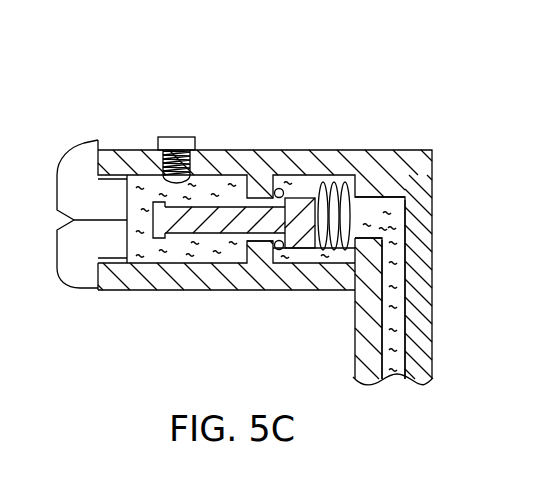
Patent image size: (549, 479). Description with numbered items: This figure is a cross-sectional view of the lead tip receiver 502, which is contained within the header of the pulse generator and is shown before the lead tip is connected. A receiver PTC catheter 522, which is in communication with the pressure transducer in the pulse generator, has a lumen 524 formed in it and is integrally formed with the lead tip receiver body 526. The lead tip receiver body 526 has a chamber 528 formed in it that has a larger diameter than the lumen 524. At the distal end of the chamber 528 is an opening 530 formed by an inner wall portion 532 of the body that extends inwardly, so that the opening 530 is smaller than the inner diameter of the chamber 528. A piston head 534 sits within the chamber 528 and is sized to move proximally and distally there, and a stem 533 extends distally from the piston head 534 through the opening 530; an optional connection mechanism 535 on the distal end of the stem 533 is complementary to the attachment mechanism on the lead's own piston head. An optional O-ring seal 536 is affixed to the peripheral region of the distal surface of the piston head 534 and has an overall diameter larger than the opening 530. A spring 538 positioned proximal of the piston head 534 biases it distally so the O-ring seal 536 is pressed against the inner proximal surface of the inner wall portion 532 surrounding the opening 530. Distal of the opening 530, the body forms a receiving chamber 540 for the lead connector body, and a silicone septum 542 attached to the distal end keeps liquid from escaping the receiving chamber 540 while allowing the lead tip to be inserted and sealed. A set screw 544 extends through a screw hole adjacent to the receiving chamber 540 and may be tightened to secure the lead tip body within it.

The lead tip receiver 502 is at (176, 82).
The receiver PTC catheter 522 is at (422, 277).
The lumen 524 is at (392, 338).
The lead tip receiver body 526 is at (248, 157).
The chamber 528 is at (332, 180).
The opening 530 is at (230, 252).
The inner wall portion 532 is at (260, 252).
The stem 533 is at (198, 213).
The piston head 534 is at (297, 205).
The connection mechanism 535 is at (155, 202).
The O-ring seal 536 is at (280, 189).
The spring 538 is at (353, 209).
The receiving chamber 540 is at (172, 260).
The silicone septum 542 is at (69, 165).
The set screw 544 is at (183, 137).